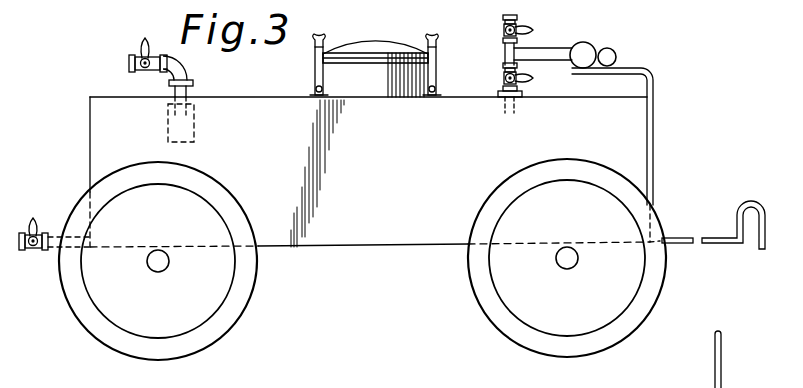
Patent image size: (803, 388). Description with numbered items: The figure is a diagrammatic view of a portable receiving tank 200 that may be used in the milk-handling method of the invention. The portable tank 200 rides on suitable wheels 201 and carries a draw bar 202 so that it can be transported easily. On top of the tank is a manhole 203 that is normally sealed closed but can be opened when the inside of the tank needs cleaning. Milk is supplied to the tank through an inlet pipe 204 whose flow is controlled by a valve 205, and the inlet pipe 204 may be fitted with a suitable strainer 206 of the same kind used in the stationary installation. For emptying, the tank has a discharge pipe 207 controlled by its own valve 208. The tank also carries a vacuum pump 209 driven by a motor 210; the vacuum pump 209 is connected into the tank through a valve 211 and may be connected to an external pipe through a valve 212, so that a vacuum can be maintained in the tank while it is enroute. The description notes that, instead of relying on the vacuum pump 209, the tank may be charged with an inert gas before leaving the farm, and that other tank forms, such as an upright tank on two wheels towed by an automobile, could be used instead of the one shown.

The portable tank 200 is at (362, 235).
The wheels 201 is at (231, 307).
The draw bar 202 is at (714, 237).
The manhole 203 is at (377, 53).
The inlet pipe 204 is at (194, 88).
The valve 205 is at (134, 73).
The strainer 206 is at (196, 120).
The discharge pipe 207 is at (58, 238).
The valve 208 is at (30, 250).
The vacuum pump 209 is at (596, 31).
The motor 210 is at (609, 49).
The valve 211 is at (503, 79).
The valve 212 is at (503, 31).